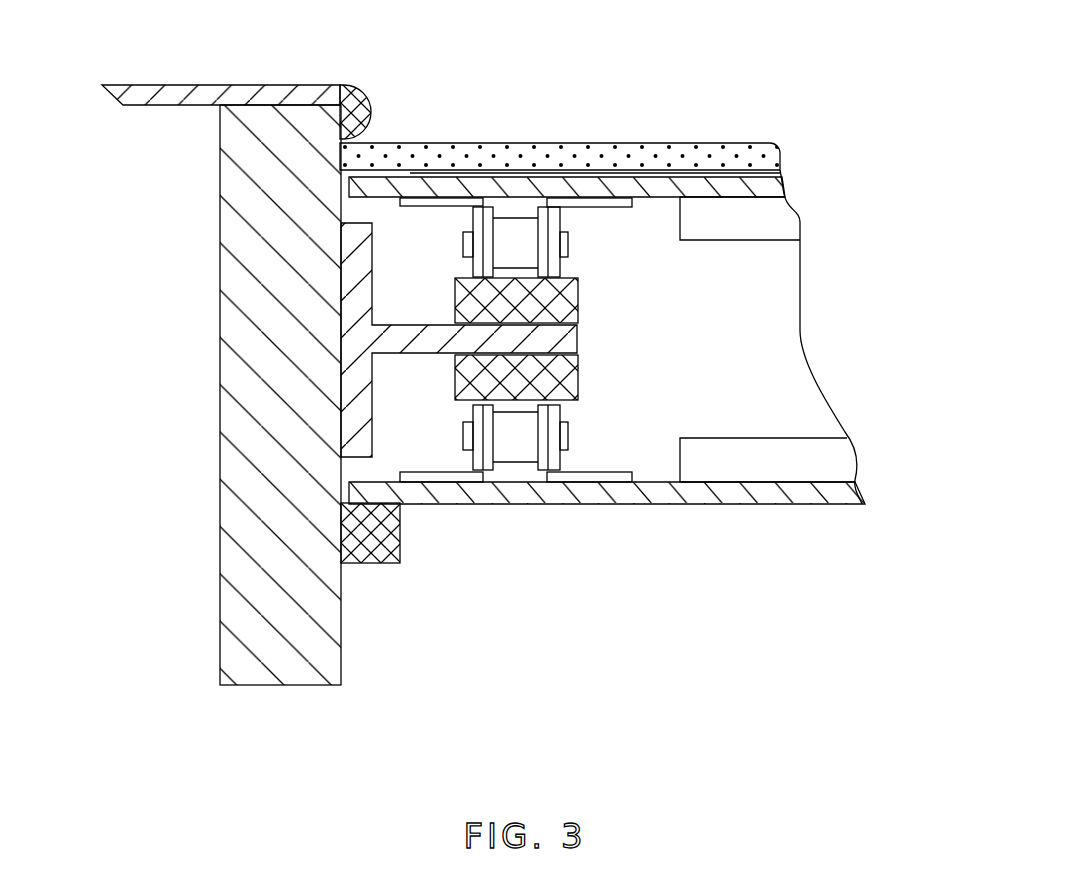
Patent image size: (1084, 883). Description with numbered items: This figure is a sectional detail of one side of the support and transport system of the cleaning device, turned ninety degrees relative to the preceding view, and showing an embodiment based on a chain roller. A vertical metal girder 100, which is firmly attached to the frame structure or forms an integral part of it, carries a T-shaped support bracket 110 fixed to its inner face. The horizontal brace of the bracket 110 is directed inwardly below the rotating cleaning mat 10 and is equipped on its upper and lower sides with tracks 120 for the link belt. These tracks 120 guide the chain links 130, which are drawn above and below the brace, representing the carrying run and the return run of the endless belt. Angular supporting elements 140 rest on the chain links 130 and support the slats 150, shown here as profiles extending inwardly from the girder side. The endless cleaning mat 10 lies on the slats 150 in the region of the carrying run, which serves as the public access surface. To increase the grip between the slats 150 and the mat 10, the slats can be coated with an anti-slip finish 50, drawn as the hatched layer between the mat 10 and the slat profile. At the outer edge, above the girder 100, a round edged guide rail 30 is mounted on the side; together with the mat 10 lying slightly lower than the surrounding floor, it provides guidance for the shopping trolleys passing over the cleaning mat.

The cleaning mat 10 is at (388, 147).
The guide rail 30 is at (367, 100).
The anti-slip coating 50 is at (780, 173).
The metal girder 100 is at (245, 385).
The support bracket 110 is at (366, 402).
The track 120 is at (567, 298).
The chain link 130 is at (520, 225).
The angular supporting element 140 is at (400, 205).
The slat 150 is at (800, 222).